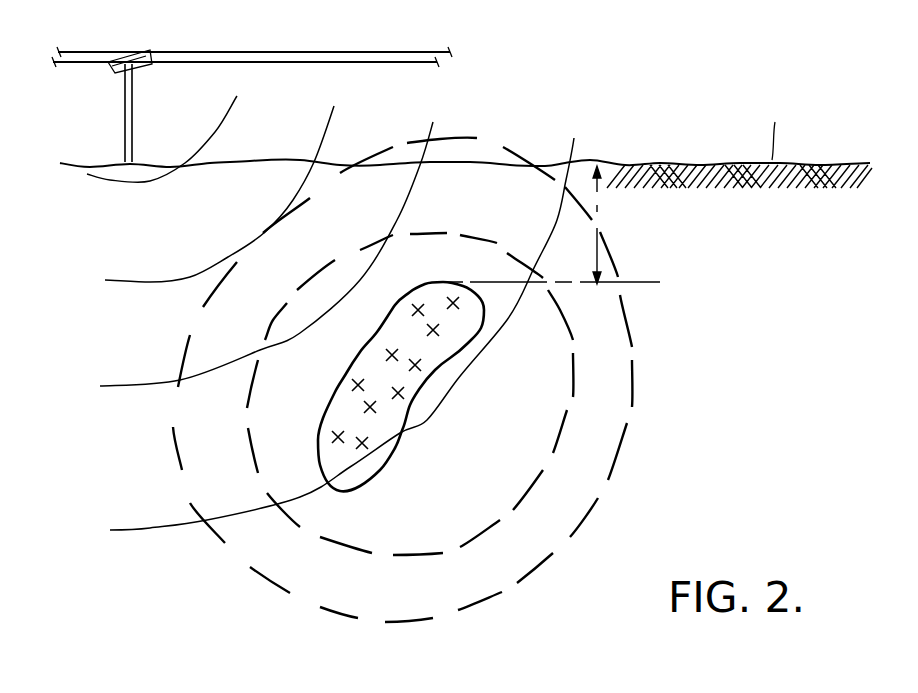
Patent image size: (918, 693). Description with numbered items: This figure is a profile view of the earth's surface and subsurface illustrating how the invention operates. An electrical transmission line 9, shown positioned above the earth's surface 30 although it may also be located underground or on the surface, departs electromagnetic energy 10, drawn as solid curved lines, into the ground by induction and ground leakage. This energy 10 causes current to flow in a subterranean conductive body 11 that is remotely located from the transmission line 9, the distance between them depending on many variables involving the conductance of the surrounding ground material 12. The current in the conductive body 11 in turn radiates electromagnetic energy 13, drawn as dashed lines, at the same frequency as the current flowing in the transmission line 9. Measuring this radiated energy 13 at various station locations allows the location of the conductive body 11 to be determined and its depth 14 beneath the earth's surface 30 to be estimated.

The electrical transmission line 9 is at (268, 55).
The electromagnetic energy 10 is at (226, 124).
The subterranean conductive body 11 is at (410, 382).
The surrounding ground material 12 is at (772, 352).
The electromagnetic energy radiated by body 13 is at (574, 384).
The depth 14 is at (600, 199).
The earth's surface 30 is at (677, 162).